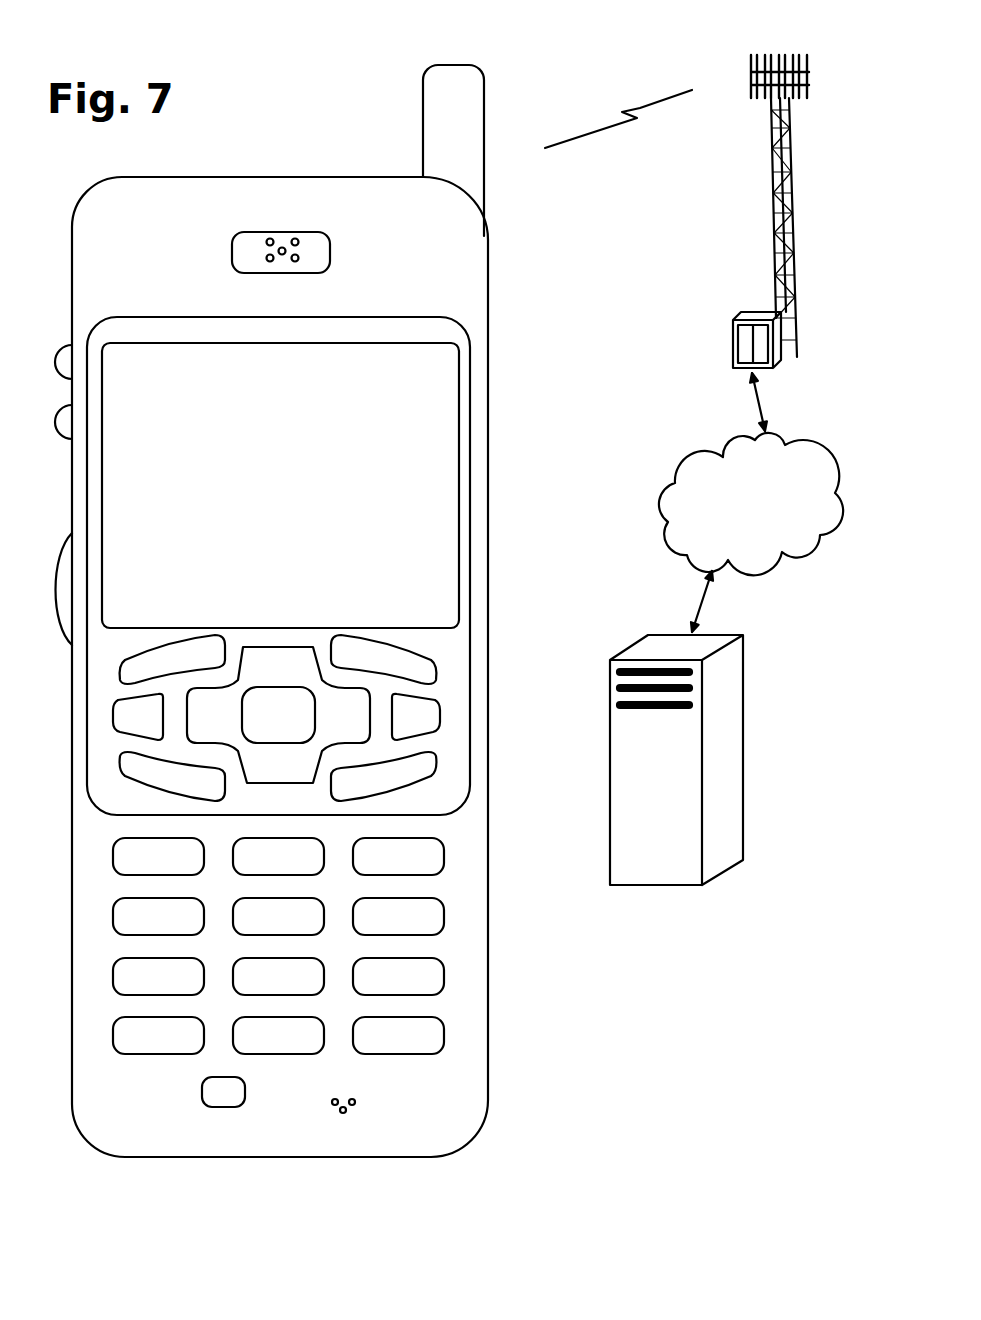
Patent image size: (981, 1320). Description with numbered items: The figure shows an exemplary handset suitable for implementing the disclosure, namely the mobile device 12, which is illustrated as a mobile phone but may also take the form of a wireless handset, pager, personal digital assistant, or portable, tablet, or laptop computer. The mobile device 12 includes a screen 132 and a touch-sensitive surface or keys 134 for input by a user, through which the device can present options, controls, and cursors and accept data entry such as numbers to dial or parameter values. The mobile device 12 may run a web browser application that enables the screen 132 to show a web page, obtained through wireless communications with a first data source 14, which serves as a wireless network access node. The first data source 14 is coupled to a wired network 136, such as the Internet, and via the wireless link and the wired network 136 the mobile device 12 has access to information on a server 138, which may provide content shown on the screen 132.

The mobile device 12 is at (121, 1158).
The first data source 14 is at (767, 223).
The screen 132 is at (475, 356).
The keys 134 is at (497, 1028).
The wired network 136 is at (678, 548).
The server 138 is at (657, 885).